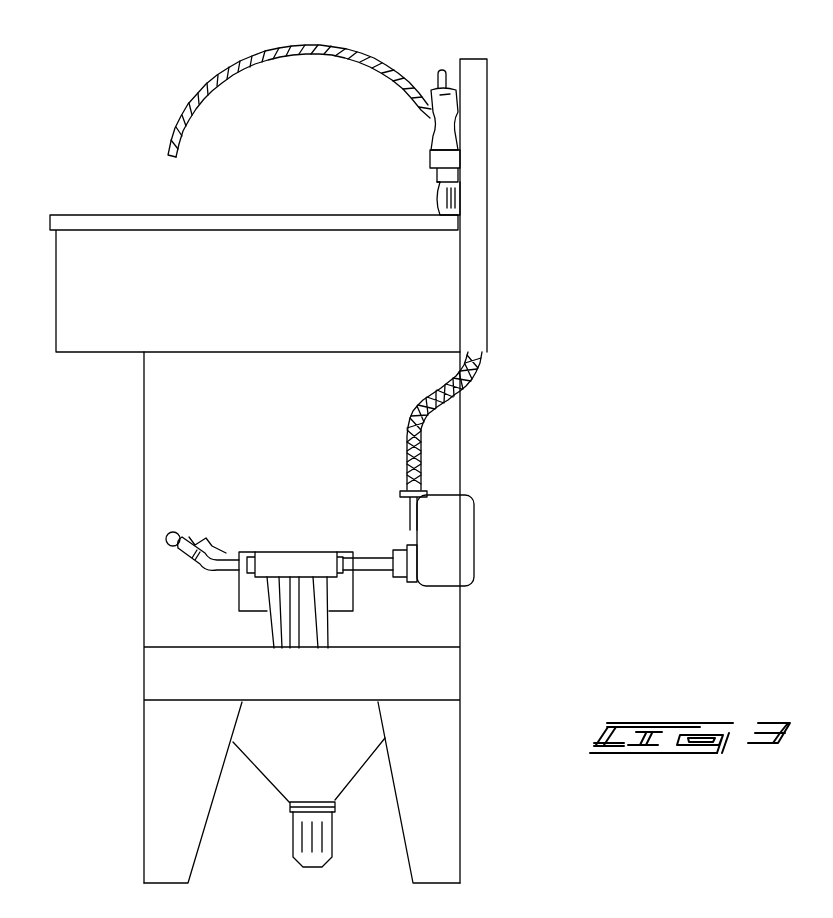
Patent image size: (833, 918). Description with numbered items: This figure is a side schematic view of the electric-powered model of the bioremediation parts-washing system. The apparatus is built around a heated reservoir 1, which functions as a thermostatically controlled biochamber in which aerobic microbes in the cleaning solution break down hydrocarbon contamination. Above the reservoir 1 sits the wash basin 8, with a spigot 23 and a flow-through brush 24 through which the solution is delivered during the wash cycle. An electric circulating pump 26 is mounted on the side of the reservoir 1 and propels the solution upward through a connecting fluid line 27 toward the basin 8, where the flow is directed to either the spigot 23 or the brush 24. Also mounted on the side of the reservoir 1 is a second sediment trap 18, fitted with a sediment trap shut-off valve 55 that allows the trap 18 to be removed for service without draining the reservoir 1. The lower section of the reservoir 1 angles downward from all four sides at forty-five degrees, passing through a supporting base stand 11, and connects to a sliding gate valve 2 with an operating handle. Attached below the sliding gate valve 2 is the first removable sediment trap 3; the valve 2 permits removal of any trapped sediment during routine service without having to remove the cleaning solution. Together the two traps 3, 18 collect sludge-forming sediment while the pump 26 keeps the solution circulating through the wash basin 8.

The heated reservoir 1 is at (318, 460).
The sliding gate valve 2 is at (290, 805).
The first sediment trap 3 is at (305, 858).
The wash basin 8 is at (274, 310).
The supporting base stand 11 is at (440, 797).
The second sediment trap 18 is at (307, 628).
The spigot 23 is at (317, 50).
The flow-through brush 24 is at (443, 135).
The electric circulating pump 26 is at (443, 531).
The fluid line 27 is at (422, 436).
The sediment trap shut-off valve 55 is at (227, 552).